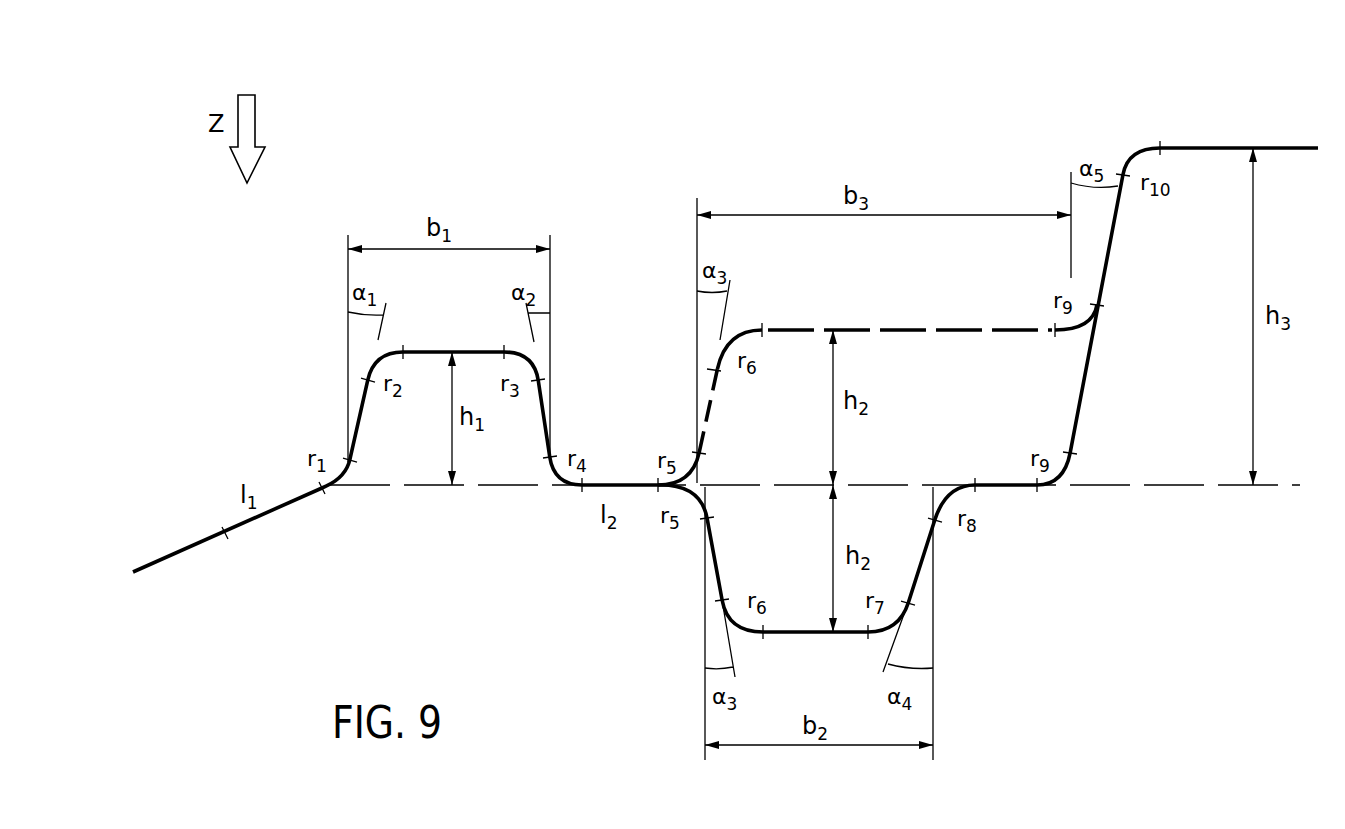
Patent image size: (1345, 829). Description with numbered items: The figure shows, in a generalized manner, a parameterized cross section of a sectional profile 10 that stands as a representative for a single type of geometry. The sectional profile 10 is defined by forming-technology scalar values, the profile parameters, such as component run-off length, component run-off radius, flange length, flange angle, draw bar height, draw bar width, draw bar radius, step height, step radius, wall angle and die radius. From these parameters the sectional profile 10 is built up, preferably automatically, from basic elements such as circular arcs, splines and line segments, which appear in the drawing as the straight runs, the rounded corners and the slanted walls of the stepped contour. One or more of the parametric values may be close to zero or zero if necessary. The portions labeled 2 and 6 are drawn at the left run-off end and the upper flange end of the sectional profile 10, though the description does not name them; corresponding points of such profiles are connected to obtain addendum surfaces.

The sectional profile 10 is at (582, 117).
The sheet edge portion 2 is at (177, 556).
The flange portion 6 is at (1293, 150).